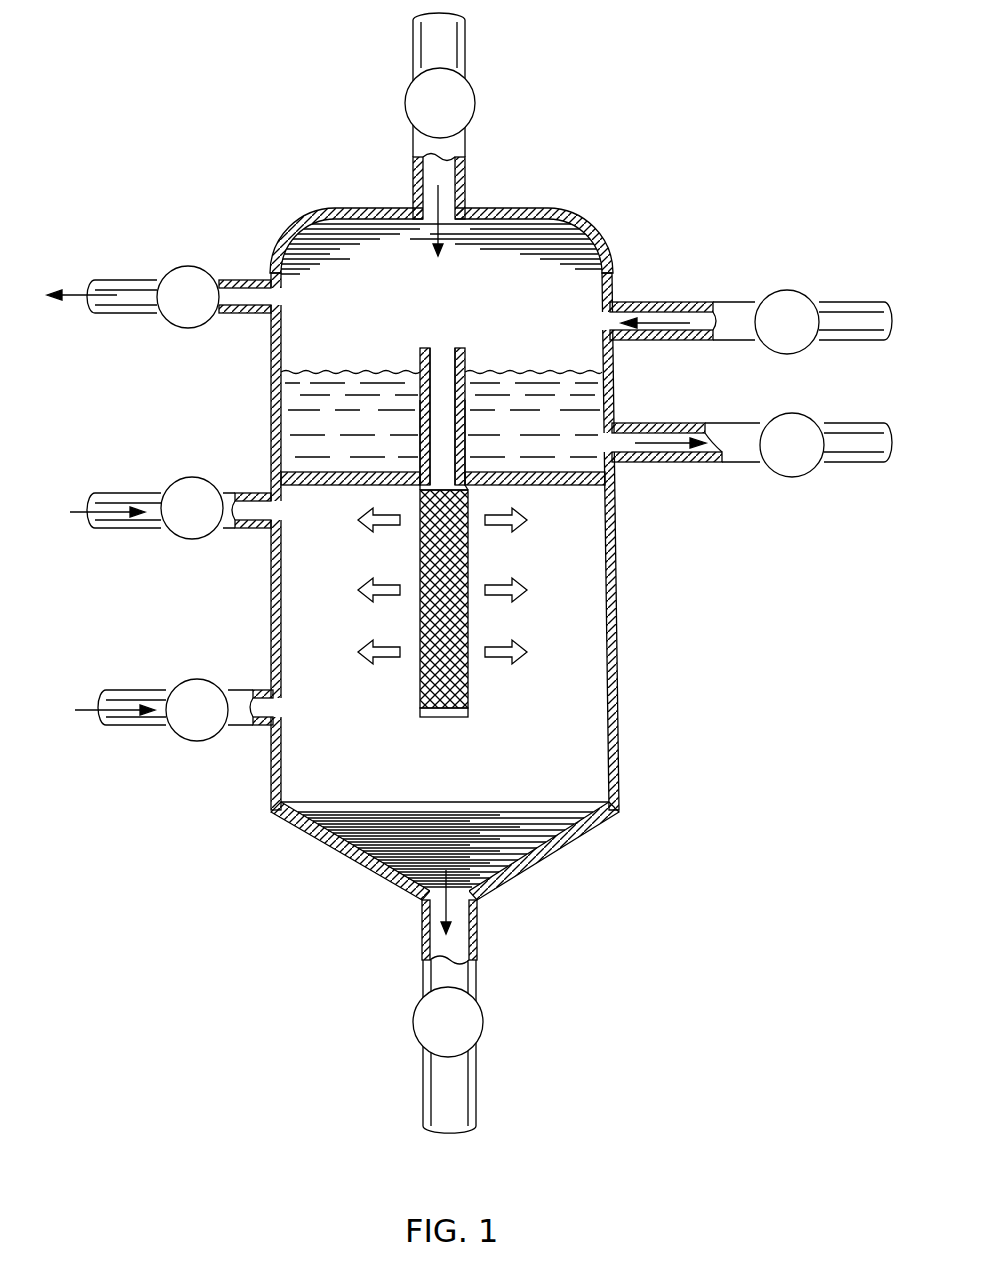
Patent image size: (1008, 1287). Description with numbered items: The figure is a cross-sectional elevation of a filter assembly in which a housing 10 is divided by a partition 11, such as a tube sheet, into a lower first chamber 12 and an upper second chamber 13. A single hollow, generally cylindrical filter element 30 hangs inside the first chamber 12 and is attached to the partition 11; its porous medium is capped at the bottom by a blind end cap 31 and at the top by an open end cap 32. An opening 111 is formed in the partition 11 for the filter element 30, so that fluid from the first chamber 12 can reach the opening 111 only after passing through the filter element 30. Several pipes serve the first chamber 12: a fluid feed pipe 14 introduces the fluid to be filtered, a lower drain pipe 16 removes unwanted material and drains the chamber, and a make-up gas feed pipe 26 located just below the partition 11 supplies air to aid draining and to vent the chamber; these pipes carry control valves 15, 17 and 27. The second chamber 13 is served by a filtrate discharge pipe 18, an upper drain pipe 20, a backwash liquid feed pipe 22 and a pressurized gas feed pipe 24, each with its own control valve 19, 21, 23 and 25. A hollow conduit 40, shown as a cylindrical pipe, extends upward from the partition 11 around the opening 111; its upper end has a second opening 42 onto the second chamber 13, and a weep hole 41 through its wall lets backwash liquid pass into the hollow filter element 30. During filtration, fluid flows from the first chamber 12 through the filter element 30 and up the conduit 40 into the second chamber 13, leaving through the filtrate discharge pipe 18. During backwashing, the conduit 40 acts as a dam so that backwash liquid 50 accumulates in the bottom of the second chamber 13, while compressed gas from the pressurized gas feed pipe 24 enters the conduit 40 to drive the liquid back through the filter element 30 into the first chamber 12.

The housing 10 is at (620, 595).
The partition 11 is at (292, 470).
The first chamber 12 is at (590, 712).
The second chamber 13 is at (582, 297).
The fluid feed pipe 14 is at (240, 725).
The control valve 15 is at (195, 680).
The lower drain pipe 16 is at (478, 1083).
The control valve 17 is at (485, 1022).
The filtrate discharge pipe 18 is at (117, 312).
The control valve 19 is at (190, 268).
The upper drain pipe 20 is at (655, 462).
The control valve 21 is at (795, 477).
The backwash liquid feed pipe 22 is at (728, 307).
The control valve 23 is at (793, 352).
The pressurized gas feed pipe 24 is at (452, 50).
The control valve 25 is at (467, 115).
The make-up gas feed pipe 26 is at (245, 528).
The control valve 27 is at (185, 478).
The filter element 30 is at (470, 615).
The blind end cap 31 is at (445, 718).
The open end cap 32 is at (420, 490).
The hollow conduit 40 is at (420, 362).
The weep hole 41 is at (462, 455).
The second opening 42 is at (440, 356).
The backwash liquid 50 is at (560, 403).
The opening 111 is at (445, 495).